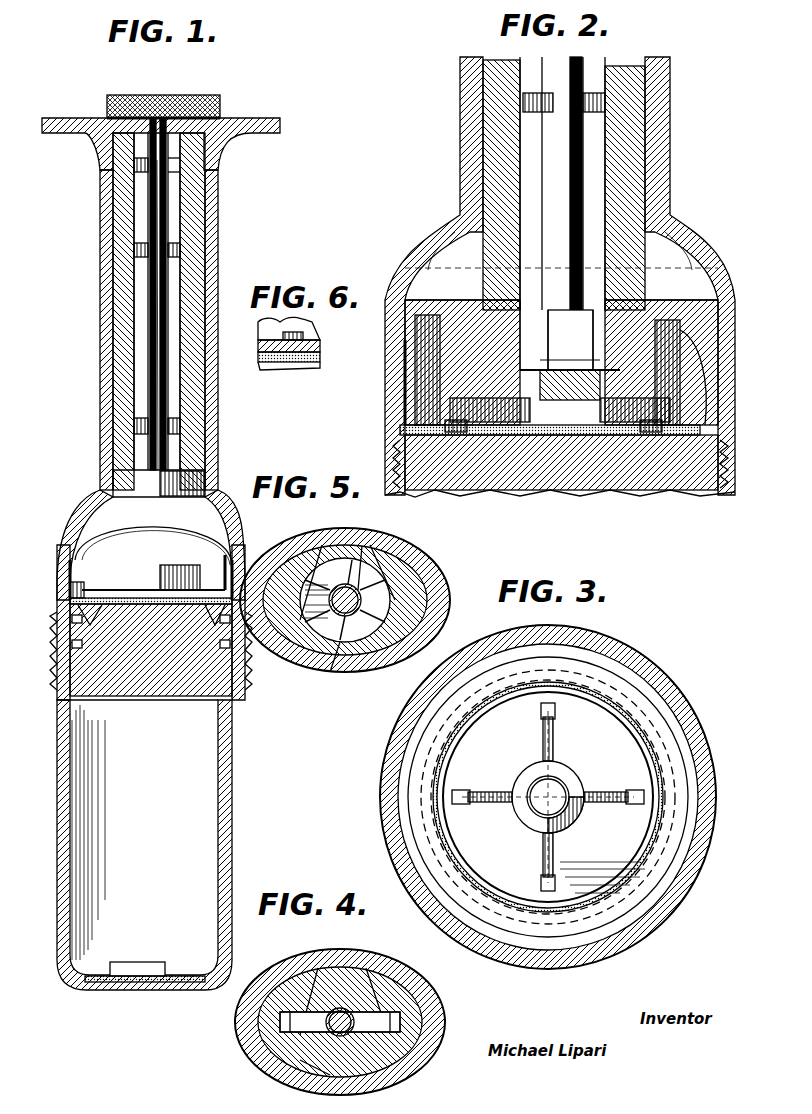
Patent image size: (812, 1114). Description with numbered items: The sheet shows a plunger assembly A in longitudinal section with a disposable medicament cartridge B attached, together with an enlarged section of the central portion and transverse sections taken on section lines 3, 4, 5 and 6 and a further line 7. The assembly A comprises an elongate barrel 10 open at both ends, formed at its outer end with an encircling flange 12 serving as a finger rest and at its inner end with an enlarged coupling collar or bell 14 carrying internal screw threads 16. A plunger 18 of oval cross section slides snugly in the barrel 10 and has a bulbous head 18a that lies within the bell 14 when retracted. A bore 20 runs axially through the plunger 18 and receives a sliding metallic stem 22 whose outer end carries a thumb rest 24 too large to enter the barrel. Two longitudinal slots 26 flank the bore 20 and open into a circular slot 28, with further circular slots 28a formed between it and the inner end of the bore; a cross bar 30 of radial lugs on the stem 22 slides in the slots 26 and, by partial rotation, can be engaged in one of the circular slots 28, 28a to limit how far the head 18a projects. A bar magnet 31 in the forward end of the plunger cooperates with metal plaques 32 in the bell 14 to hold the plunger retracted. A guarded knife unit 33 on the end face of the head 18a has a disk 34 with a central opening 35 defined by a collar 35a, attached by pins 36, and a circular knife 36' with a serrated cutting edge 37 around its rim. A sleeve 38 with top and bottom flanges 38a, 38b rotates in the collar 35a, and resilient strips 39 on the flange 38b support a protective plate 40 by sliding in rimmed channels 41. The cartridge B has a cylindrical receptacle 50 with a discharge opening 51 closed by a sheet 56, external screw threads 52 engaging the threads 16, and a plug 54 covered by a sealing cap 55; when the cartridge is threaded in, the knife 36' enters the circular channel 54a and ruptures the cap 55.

In FIG. 1, the barrel 10 is at (100, 330).
In FIG. 2, the barrel 10 is at (560, 276).
In FIG. 5, the barrel 10 is at (450, 592).
In FIG. 4, the barrel 10 is at (460, 1010).
In FIG. 1, the encircling flange 12 is at (280, 133).
In FIG. 1, the coupling collar or bell 14 is at (57, 555).
In FIG. 2, the coupling collar or bell 14 is at (395, 320).
In FIG. 3, the coupling collar or bell 14 is at (640, 665).
In FIG. 1, the internal screw threads 16 is at (58, 672).
In FIG. 2, the internal screw threads 16 is at (722, 452).
In FIG. 1, the plunger 18 is at (200, 320).
In FIG. 2, the plunger 18 is at (630, 72).
In FIG. 5, the plunger 18 is at (420, 570).
In FIG. 4, the plunger 18 is at (285, 1018).
In FIG. 1, the bulbous head 18a is at (226, 565).
In FIG. 2, the bulbous head 18a is at (445, 382).
In FIG. 5, the bulbous head 18a is at (265, 548).
In FIG. 1, the bore 20 is at (148, 285).
In FIG. 2, the bore 20 is at (582, 190).
In FIG. 5, the bore 20 is at (368, 556).
In FIG. 4, the bore 20 is at (325, 1078).
In FIG. 1, the metallic stem 22 is at (152, 390).
In FIG. 2, the metallic stem 22 is at (583, 162).
In FIG. 5, the metallic stem 22 is at (372, 640).
In FIG. 4, the metallic stem 22 is at (354, 1006).
In FIG. 1, the thumb rest 24 is at (222, 106).
In FIG. 1, the longitudinal slots 26 is at (178, 208).
In FIG. 2, the longitudinal slots 26 is at (523, 135).
In FIG. 5, the longitudinal slots 26 is at (320, 545).
In FIG. 4, the longitudinal slots 26 is at (292, 982).
In FIG. 1, the circular slot 28 is at (134, 165).
In FIG. 1, the circular slots 28a is at (180, 258).
In FIG. 5, the circular slots 28a is at (345, 655).
In FIG. 1, the cross arm or cross bar 30 is at (134, 428).
In FIG. 2, the cross arm or cross bar 30 is at (523, 103).
In FIG. 4, the cross arm or cross bar 30 is at (396, 975).
In FIG. 2, the bar magnet 31 is at (466, 236).
In FIG. 1, the metal plaques 32 is at (85, 530).
In FIG. 2, the metal plaques 32 is at (430, 290).
In FIG. 1, the guarded knife unit 33 is at (126, 555).
In FIG. 2, the guarded knife unit 33 is at (670, 424).
In FIG. 3, the guarded knife unit 33 is at (560, 687).
In FIG. 1, the circular plate or disk 34 is at (104, 585).
In FIG. 2, the circular plate or disk 34 is at (665, 400).
In FIG. 2, the central opening 35 is at (565, 475).
In FIG. 2, the collar 35a is at (575, 325).
In FIG. 2, the pins 36 is at (547, 370).
In FIG. 1, the circular knife 36' is at (46, 580).
In FIG. 2, the circular knife 36' is at (374, 382).
In FIG. 3, the circular knife 36' is at (548, 783).
In FIG. 6, the circular knife 36' is at (275, 328).
In FIG. 1, the serrated cutting edge 37 is at (162, 585).
In FIG. 2, the serrated cutting edge 37 is at (660, 433).
In FIG. 2, the sleeve 38 is at (560, 390).
In FIG. 3, the sleeve 38 is at (570, 810).
In FIG. 2, the top flange 38a is at (545, 380).
In FIG. 2, the bottom flange 38b is at (460, 415).
In FIG. 3, the bottom flange 38b is at (528, 765).
In FIG. 2, the resilient strips 39 is at (480, 412).
In FIG. 3, the resilient strips 39 is at (555, 744).
In FIG. 6, the resilient strips 39 is at (300, 364).
In FIG. 2, the protective plate 40 is at (595, 478).
In FIG. 3, the protective plate 40 is at (450, 824).
In FIG. 6, the protective plate 40 is at (322, 356).
In FIG. 2, the rimmed channels 41 is at (468, 470).
In FIG. 3, the rimmed channels 41 is at (555, 712).
In FIG. 6, the rimmed channels 41 is at (288, 334).
In FIG. 1, the cylindrical receptacle 50 is at (57, 852).
In FIG. 1, the discharge opening 51 is at (150, 965).
In FIG. 1, the external screw threads 52 is at (60, 640).
In FIG. 2, the external screw threads 52 is at (410, 478).
In FIG. 1, the closure or plug 54 is at (121, 700).
In FIG. 2, the closure or plug 54 is at (480, 475).
In FIG. 6, the closure or plug 54 is at (283, 362).
In FIG. 1, the circular channel 54a is at (70, 597).
In FIG. 2, the circular channel 54a is at (400, 430).
In FIG. 3, the circular channel 54a is at (612, 712).
In FIG. 1, the sealing cap 55 is at (70, 608).
In FIG. 2, the sealing cap 55 is at (715, 435).
In FIG. 3, the sealing cap 55 is at (410, 810).
In FIG. 1, the sheet 56 is at (97, 982).
In FIG. 1, the plunger assembly A is at (92, 312).
In FIG. 2, the plunger assembly A is at (699, 127).
In FIG. 1, the disposable medicament cartridge B is at (57, 794).
In FIG. 2, the section line 3— 3 is at (362, 395).
In FIG. 2, the section line 4— 4 is at (440, 93).
In FIG. 1, the section line 5— 5 is at (72, 245).
In FIG. 3, the section line 6— 6 is at (625, 784).
In FIG. 2, the section line 7 is at (385, 267).